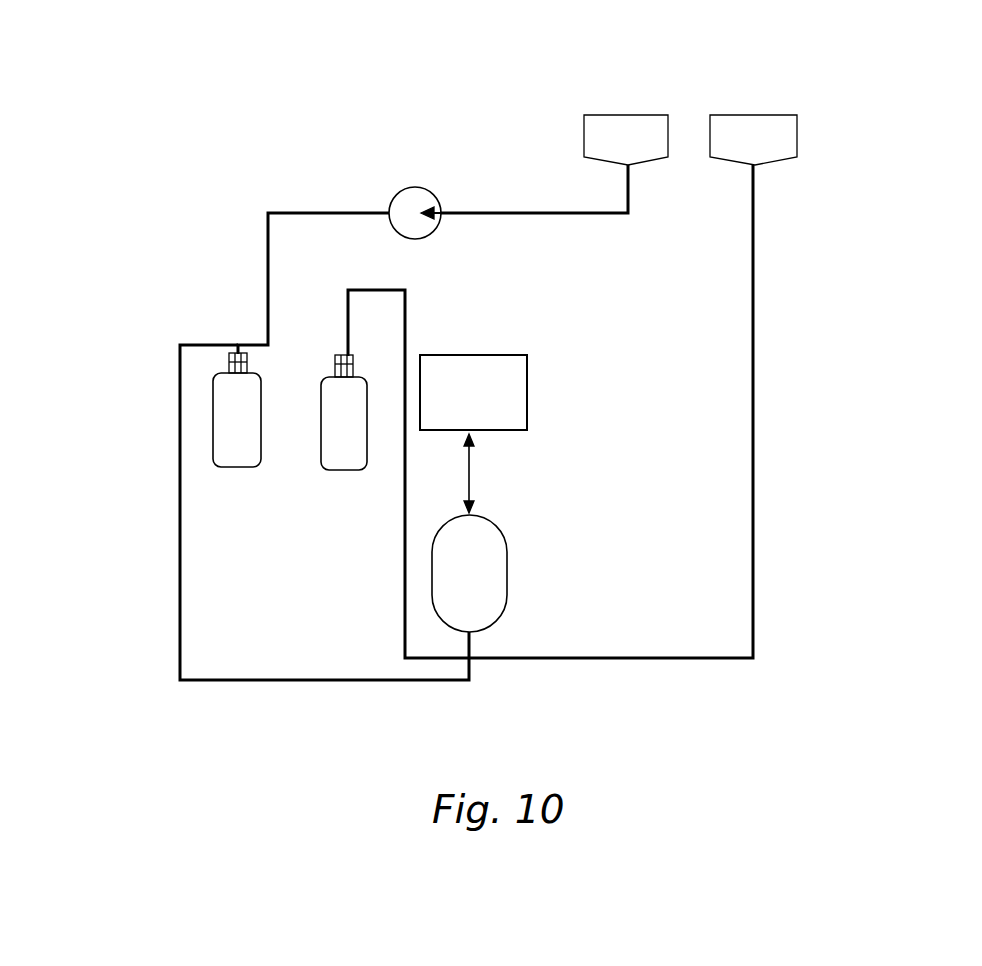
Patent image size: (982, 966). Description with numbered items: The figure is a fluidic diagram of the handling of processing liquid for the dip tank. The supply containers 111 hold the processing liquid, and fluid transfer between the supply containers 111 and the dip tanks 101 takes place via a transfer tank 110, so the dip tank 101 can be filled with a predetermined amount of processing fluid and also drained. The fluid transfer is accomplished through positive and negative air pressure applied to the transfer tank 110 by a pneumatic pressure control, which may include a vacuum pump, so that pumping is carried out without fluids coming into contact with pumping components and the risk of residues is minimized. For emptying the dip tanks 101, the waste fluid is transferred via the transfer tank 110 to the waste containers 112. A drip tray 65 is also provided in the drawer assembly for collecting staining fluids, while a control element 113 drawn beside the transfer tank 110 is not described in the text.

The drip tray 65 is at (610, 138).
The dip tank 101 is at (755, 138).
The transfer tank 110 is at (477, 608).
The supply container 111 is at (330, 392).
The waste container 112 is at (238, 420).
The control unit 113 is at (512, 388).